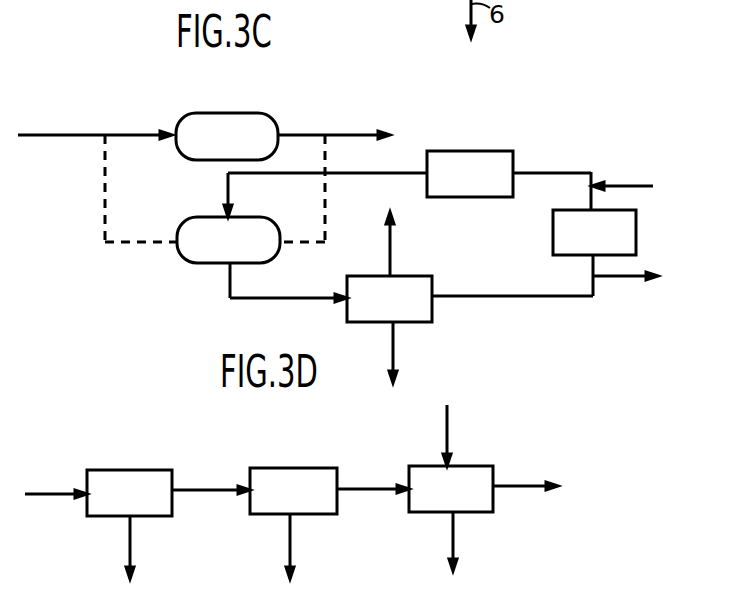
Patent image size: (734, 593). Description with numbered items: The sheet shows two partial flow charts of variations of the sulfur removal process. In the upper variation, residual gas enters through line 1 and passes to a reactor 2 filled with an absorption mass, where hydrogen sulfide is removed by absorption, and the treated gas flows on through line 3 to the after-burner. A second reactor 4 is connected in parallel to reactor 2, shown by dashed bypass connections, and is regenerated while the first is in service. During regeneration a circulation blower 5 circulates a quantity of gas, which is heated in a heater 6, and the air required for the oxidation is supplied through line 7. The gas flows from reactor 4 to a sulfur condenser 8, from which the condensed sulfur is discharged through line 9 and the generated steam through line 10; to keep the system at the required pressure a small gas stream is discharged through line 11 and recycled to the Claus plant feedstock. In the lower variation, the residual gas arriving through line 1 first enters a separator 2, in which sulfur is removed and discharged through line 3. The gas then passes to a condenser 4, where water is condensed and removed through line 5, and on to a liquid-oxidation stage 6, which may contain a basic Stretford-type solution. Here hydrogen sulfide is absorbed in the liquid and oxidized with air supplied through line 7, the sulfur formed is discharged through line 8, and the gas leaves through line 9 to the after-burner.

In FIG. 3C, the line 1 is at (48, 135).
In FIG. 3D, the line 1 is at (47, 494).
In FIG. 3C, the reactor 2 is at (235, 113).
In FIG. 3D, the reactor 2 is at (150, 470).
In FIG. 3C, the line 3 is at (308, 135).
In FIG. 3D, the line 3 is at (131, 550).
In FIG. 3C, the reactor 4 is at (250, 217).
In FIG. 3D, the reactor 4 is at (313, 468).
In FIG. 3C, the circulation blower 5 is at (636, 225).
In FIG. 3D, the circulation blower 5 is at (291, 548).
In FIG. 3C, the heater 6 is at (490, 151).
In FIG. 3D, the heater 6 is at (475, 466).
In FIG. 3C, the line 7 is at (632, 186).
In FIG. 3D, the line 7 is at (448, 415).
In FIG. 3C, the sulfur condenser 8 is at (422, 276).
In FIG. 3D, the sulfur condenser 8 is at (454, 545).
In FIG. 3C, the line 9 is at (394, 355).
In FIG. 3D, the line 9 is at (538, 485).
In FIG. 3C, the line 10 is at (391, 240).
In FIG. 3C, the line 11 is at (636, 280).